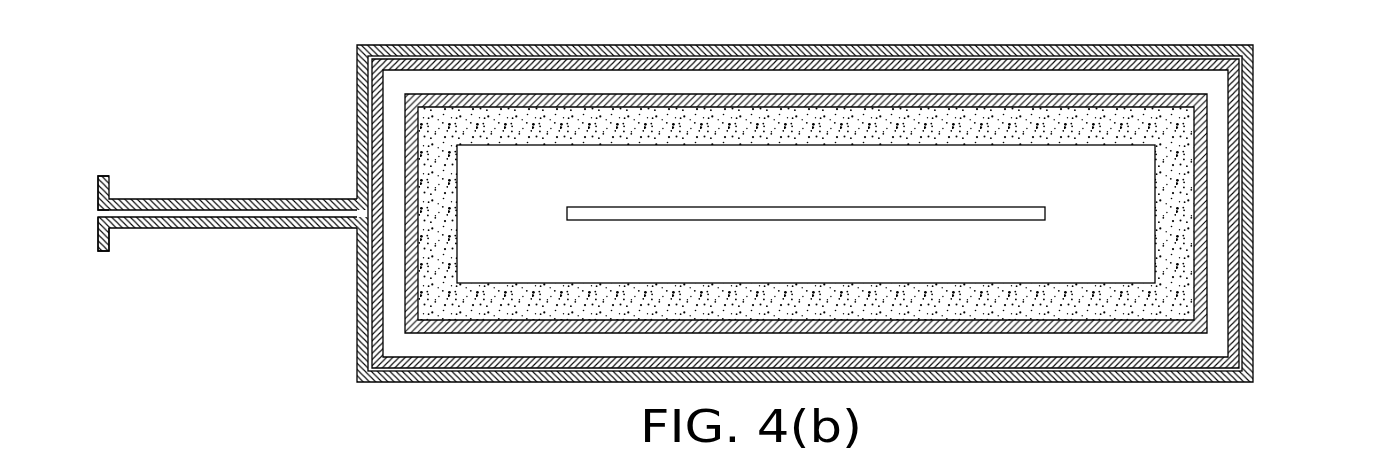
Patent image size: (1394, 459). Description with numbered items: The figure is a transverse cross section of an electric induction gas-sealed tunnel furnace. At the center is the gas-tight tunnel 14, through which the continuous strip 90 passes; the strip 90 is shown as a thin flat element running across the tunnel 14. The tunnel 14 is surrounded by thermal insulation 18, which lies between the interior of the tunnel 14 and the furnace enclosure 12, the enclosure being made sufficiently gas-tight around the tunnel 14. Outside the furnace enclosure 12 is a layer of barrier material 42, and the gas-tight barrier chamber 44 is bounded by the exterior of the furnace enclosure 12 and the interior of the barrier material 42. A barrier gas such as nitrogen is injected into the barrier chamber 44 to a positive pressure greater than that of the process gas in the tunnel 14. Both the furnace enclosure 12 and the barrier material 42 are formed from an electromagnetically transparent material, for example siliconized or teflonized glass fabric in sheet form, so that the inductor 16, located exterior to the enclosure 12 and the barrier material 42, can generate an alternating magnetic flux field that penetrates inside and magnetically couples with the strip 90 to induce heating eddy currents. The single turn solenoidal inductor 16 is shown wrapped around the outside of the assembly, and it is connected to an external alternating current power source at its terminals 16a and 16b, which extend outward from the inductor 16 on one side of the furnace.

The furnace enclosure 12 is at (1200, 258).
The gas-tight tunnel 14 is at (1107, 190).
The inductor 16 is at (1253, 103).
The terminal 16a is at (99, 176).
The terminal 16b is at (102, 252).
The thermal insulation 18 is at (514, 131).
The barrier material 42 is at (1240, 145).
The barrier chamber 44 is at (1215, 215).
The strip 90 is at (612, 212).